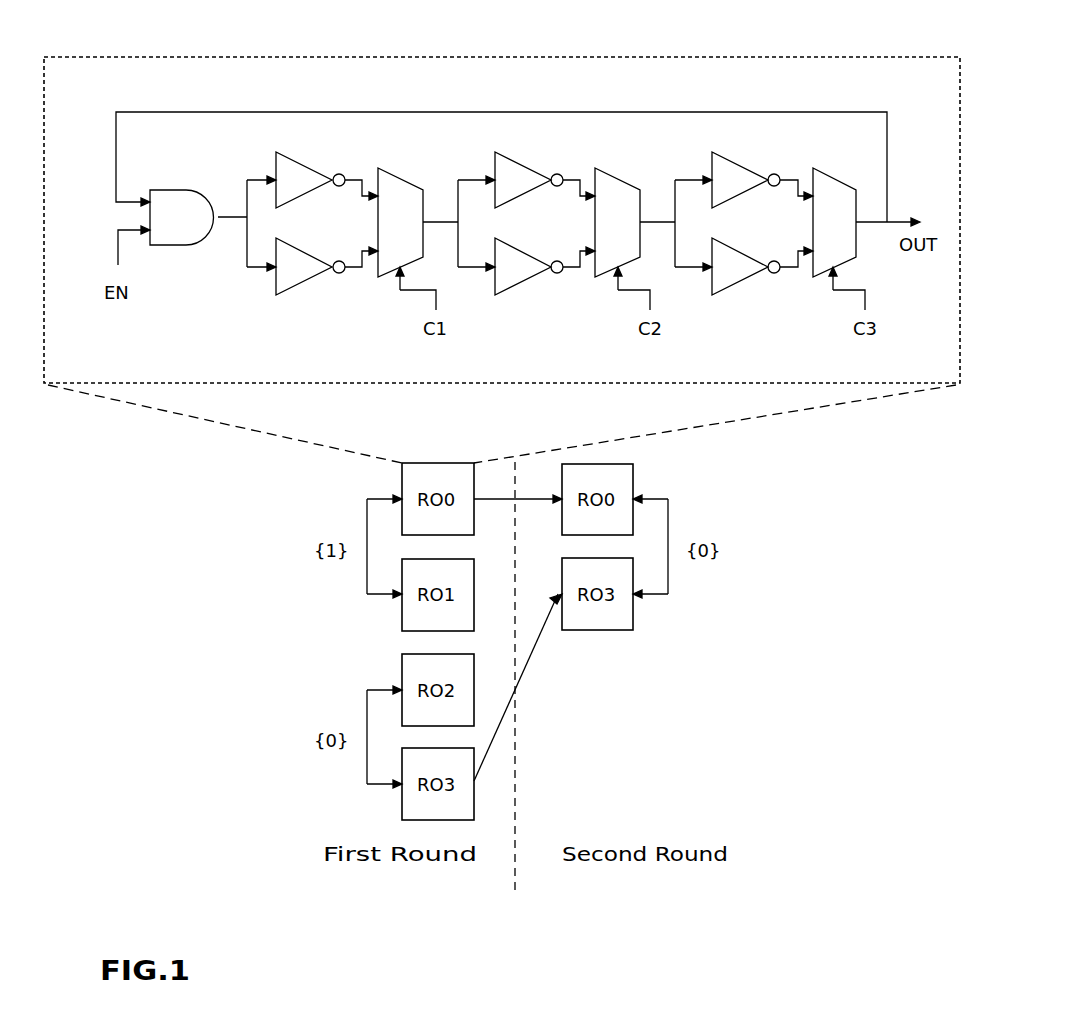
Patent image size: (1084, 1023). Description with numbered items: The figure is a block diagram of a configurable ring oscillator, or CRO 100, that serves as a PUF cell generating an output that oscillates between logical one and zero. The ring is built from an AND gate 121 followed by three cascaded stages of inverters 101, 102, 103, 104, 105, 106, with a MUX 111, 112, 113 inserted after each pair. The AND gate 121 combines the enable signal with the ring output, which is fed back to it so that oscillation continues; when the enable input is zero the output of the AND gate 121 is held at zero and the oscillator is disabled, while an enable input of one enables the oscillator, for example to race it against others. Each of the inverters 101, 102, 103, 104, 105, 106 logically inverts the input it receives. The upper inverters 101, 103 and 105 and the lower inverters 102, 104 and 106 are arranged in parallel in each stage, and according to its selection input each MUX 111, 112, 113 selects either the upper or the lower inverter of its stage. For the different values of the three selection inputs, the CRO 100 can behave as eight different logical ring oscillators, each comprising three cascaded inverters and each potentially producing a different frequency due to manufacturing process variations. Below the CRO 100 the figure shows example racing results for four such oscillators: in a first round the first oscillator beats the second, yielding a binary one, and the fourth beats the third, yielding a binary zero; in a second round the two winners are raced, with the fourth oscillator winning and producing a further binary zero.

The configurable RO (CRO) 100 is at (865, 66).
The inverter 101 is at (292, 176).
The inverter 102 is at (292, 272).
The inverter 103 is at (513, 176).
The inverter 104 is at (512, 272).
The inverter 105 is at (723, 176).
The inverter 106 is at (721, 272).
The MUX 111 is at (390, 188).
The MUX 112 is at (610, 188).
The MUX 113 is at (798, 188).
The AND gate 121 is at (163, 200).